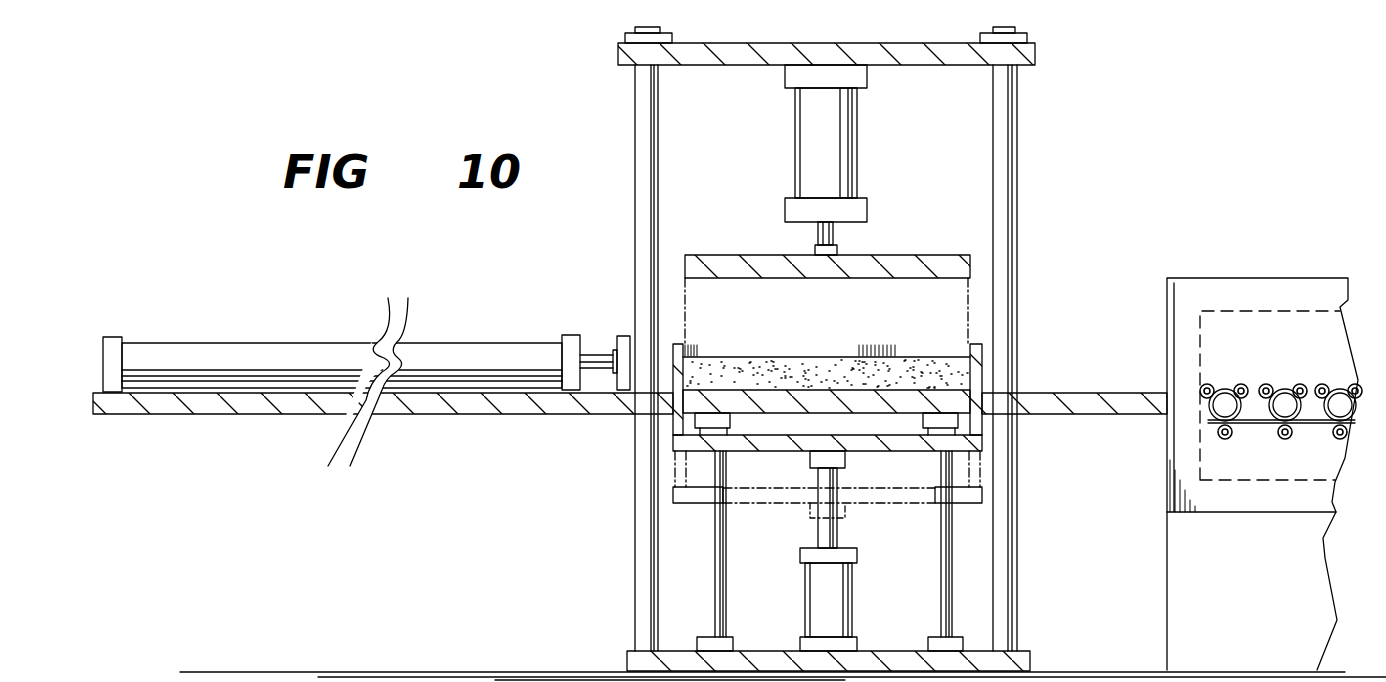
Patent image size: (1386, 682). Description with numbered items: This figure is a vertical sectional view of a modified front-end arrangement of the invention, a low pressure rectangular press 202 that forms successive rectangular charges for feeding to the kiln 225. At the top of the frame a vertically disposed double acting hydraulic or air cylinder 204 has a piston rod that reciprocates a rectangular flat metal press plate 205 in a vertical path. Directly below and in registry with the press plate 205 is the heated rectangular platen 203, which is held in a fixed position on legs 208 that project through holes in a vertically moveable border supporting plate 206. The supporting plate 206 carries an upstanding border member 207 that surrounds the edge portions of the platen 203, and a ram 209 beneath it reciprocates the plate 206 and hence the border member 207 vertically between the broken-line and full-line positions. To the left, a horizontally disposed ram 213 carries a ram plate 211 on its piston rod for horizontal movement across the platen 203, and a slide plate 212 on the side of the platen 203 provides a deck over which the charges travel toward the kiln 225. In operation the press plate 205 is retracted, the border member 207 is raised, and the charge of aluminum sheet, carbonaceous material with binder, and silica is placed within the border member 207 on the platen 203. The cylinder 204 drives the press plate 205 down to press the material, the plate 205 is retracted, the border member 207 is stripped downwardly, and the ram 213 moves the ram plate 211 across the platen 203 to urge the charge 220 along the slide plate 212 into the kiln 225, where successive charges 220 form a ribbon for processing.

The low pressure rectangular press 202 is at (860, 251).
The platen 203 is at (765, 413).
The double acting hydraulic or air cylinder 204 is at (795, 148).
The press plate 205 is at (918, 265).
The border supporting plate 206 is at (872, 451).
The border member 207 is at (697, 355).
The legs 208 is at (726, 558).
The ram 209 is at (846, 595).
The ram plate 211 is at (623, 335).
The conveyor rail 212 is at (545, 412).
The horizontally disposed ram 213 is at (487, 340).
The charge 220 is at (783, 360).
The kiln 225 is at (1227, 275).